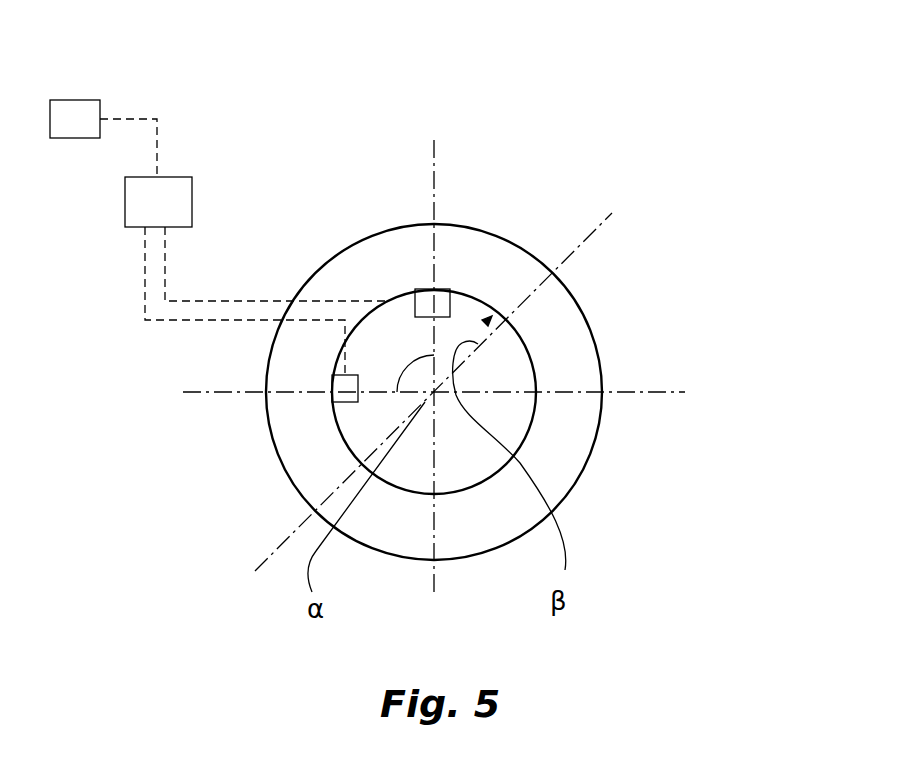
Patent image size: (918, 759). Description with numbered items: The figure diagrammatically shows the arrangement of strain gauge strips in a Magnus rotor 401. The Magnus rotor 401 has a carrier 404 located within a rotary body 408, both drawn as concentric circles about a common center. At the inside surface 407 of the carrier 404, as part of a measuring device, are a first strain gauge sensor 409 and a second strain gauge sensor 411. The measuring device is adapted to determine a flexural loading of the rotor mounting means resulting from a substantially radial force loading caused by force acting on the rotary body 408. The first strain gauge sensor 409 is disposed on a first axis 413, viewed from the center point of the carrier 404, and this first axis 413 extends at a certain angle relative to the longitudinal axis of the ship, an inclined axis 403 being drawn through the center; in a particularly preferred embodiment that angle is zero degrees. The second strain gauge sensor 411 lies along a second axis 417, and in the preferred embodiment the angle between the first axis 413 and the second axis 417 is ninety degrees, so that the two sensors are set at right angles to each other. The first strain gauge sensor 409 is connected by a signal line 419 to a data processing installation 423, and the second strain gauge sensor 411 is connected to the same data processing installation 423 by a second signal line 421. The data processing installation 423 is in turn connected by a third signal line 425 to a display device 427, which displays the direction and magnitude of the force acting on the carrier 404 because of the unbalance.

The Magnus rotor 401 is at (715, 216).
The tilted sensor axis 403 is at (598, 228).
The carrier 404 is at (533, 365).
The inside surface 407 is at (490, 318).
The rotary body 408 is at (590, 463).
The first strain gauge sensor 409 is at (450, 292).
The second strain gauge sensor 411 is at (338, 403).
The first axis 413 is at (433, 155).
The second axis 417 is at (199, 394).
The signal line 419 is at (240, 300).
The second signal line 421 is at (145, 277).
The data processing installation 423 is at (145, 207).
The third signal line 425 is at (158, 147).
The display device 427 is at (101, 107).